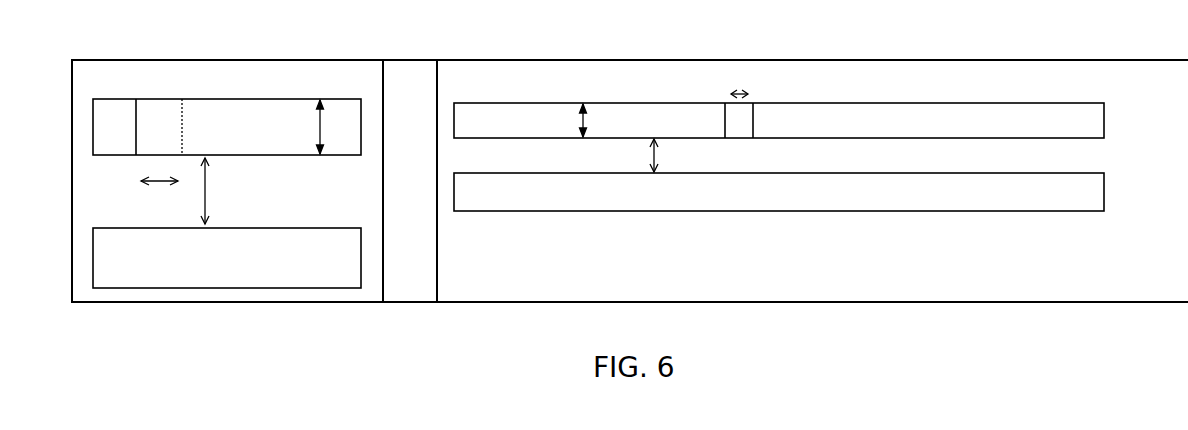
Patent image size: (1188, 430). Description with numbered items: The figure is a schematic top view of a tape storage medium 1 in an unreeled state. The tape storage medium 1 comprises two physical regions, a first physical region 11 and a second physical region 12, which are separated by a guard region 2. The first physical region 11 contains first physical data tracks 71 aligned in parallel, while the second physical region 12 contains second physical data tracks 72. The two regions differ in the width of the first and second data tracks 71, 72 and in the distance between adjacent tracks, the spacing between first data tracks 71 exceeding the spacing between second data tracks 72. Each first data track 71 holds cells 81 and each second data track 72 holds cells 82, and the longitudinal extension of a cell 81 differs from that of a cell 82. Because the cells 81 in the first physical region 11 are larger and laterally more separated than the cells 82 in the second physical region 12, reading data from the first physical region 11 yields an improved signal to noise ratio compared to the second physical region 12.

The tape storage medium 1 is at (1058, 303).
The guard region 2 is at (410, 181).
The first physical region 11 is at (227, 84).
The second physical region 12 is at (813, 203).
The first physical data track 71 is at (238, 258).
The second physical data track 72 is at (843, 127).
The cell 81 is at (163, 108).
The cell 82 is at (738, 126).